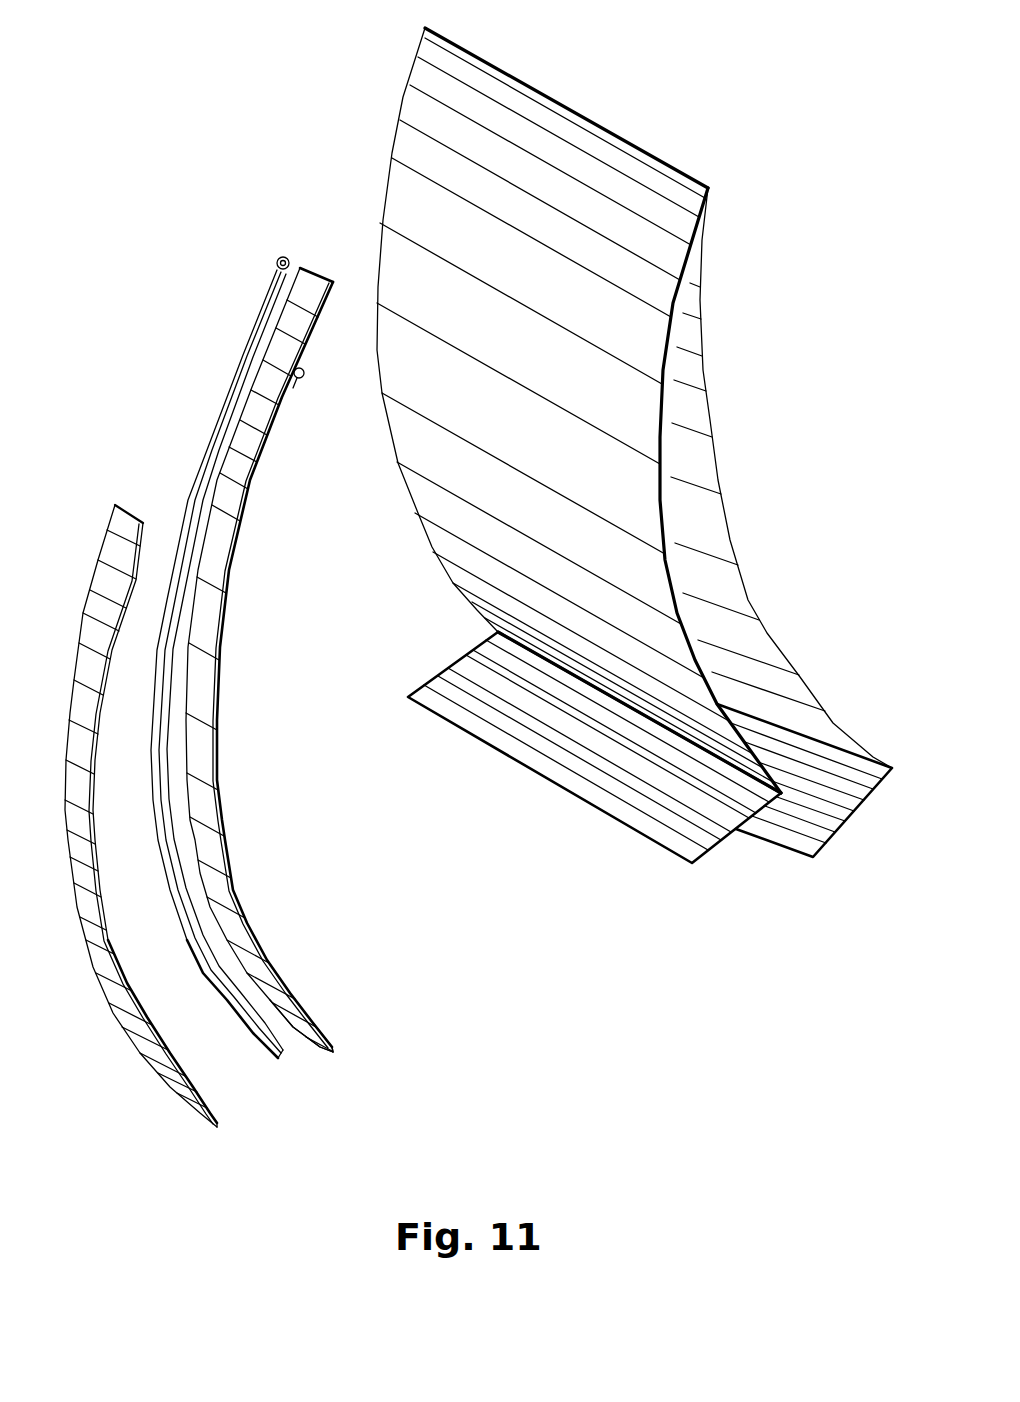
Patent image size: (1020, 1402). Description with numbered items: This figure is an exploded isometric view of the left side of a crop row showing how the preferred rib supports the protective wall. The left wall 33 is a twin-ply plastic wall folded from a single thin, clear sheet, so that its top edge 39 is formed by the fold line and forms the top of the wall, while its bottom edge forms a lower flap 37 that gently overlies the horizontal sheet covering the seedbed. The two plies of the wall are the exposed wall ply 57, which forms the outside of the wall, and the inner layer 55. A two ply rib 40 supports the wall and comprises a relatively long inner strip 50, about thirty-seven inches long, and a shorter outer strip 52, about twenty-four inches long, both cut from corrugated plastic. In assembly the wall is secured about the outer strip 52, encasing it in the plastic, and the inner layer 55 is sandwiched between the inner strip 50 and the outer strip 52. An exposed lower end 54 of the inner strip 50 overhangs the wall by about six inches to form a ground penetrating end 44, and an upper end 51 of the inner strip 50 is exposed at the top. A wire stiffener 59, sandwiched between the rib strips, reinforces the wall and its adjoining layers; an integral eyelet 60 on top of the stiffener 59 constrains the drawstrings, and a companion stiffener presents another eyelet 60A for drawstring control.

The left wall 33 is at (752, 478).
The top edge 39 is at (630, 143).
The exposed wall ply 57 is at (450, 520).
The lower flap 37 is at (650, 805).
The inner layer 55 is at (740, 645).
The two ply rib 40 is at (183, 310).
The ground penetrating end 44 is at (400, 1051).
The inner strip 50 is at (198, 763).
The upper end 51 is at (322, 268).
The outer strip 52 is at (90, 898).
The exposed lower end 54 is at (255, 975).
The stiffener 59 is at (202, 462).
The eyelet 60 is at (279, 258).
The eyelet 60A is at (299, 386).